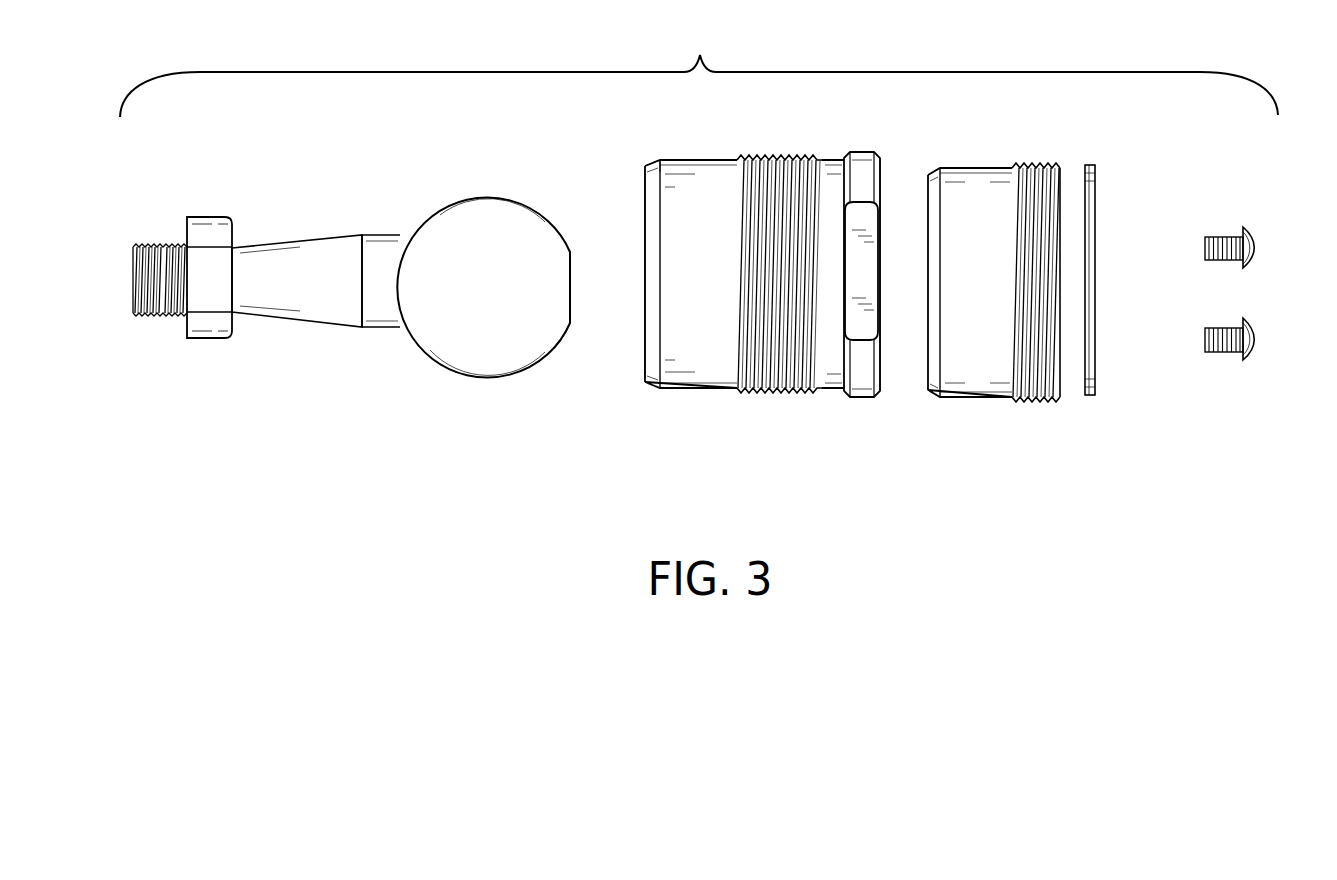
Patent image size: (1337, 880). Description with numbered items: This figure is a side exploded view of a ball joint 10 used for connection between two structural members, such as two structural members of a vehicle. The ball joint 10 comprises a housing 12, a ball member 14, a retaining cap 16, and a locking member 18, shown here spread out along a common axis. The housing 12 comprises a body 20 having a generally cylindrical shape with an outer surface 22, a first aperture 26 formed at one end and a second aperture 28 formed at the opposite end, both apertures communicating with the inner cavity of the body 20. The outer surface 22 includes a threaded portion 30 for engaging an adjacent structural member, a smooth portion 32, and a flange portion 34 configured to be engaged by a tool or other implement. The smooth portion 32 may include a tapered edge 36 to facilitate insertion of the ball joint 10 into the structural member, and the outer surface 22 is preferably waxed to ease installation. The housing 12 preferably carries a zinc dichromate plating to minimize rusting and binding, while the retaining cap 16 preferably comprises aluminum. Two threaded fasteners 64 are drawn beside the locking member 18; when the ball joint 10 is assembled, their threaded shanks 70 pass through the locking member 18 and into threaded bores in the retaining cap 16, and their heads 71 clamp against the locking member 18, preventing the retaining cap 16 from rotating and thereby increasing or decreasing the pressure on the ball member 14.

The ball joint 10 is at (699, 68).
The ball member 14 is at (315, 343).
The housing 12 is at (710, 392).
The tapered edge 36 is at (653, 162).
The first aperture 26 is at (623, 340).
The outer surface 22 is at (677, 363).
The smooth portion 32 is at (675, 158).
The body 20 is at (708, 167).
The threaded portion 30 is at (792, 158).
The flange portion 34 is at (863, 157).
The second aperture 28 is at (892, 365).
The retaining cap 16 is at (957, 398).
The locking member 18 is at (1093, 343).
The threaded fastener 64 is at (1248, 222).
The threaded shank 70 is at (1222, 237).
The head 71 is at (1252, 262).